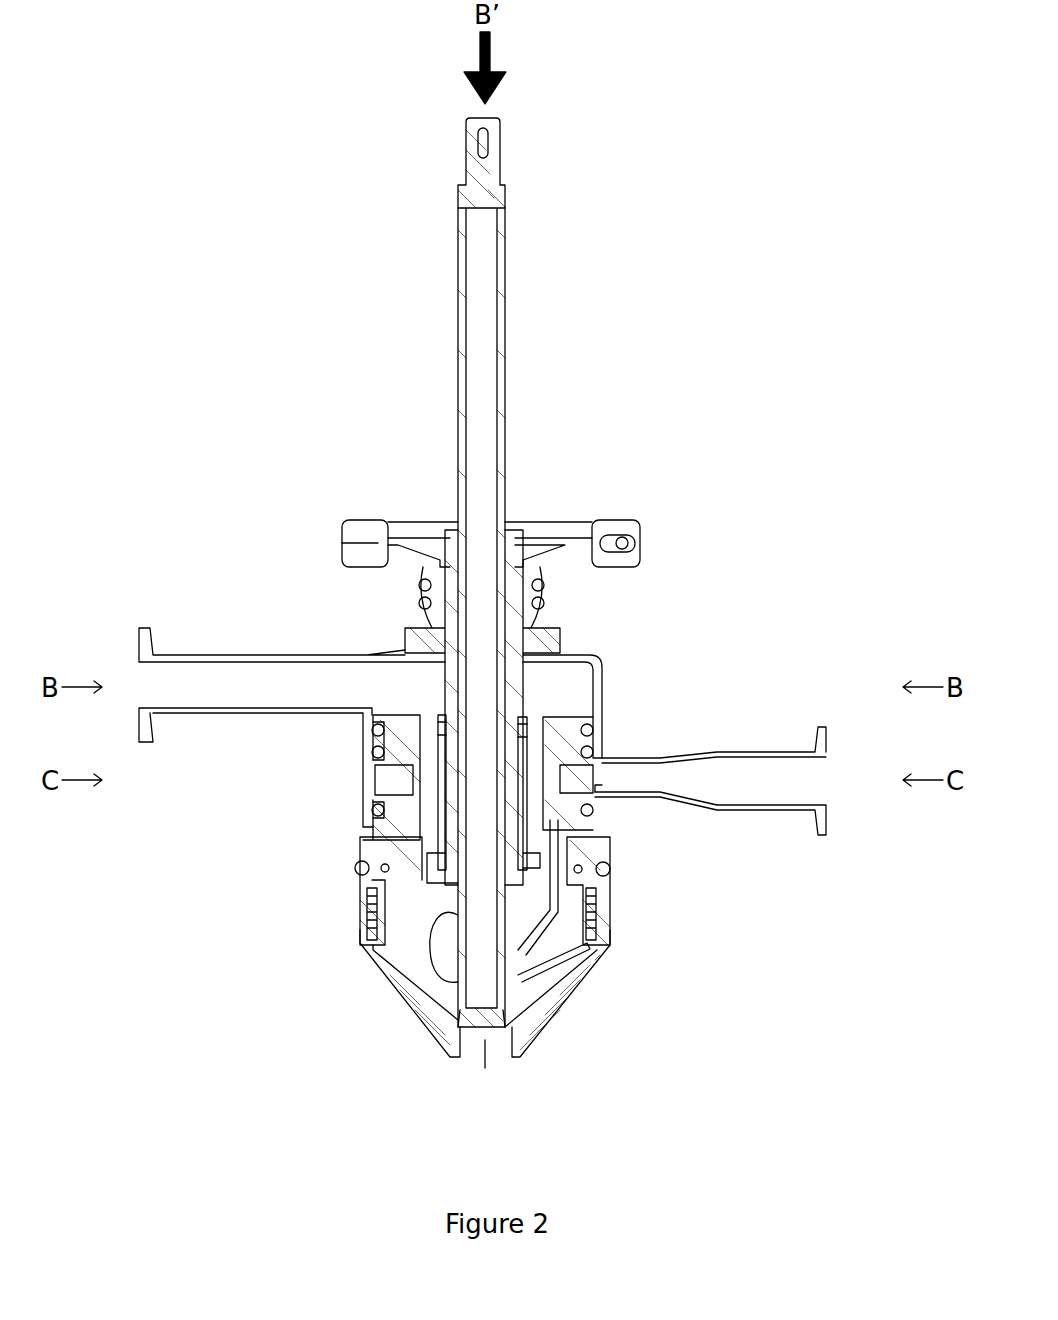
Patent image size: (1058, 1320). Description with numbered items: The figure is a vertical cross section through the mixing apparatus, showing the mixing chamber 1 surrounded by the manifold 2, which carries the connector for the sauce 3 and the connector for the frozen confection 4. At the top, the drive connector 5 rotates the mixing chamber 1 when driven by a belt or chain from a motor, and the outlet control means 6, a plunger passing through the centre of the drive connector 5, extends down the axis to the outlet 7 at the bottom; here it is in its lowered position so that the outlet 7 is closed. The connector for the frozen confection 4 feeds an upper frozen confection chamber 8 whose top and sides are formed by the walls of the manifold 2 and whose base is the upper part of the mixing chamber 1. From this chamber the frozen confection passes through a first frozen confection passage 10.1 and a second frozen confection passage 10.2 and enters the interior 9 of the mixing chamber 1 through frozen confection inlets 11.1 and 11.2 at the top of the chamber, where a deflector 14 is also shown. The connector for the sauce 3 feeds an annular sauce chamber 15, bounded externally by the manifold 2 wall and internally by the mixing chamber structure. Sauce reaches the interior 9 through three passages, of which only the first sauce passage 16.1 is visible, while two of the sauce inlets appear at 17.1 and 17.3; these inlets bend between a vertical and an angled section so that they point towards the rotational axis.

The mixing chamber 1 is at (568, 1005).
The manifold 2 is at (605, 660).
The connector for the sauce 3 is at (712, 775).
The connector for the frozen confection 4 is at (290, 680).
The drive connector 5 is at (525, 550).
The outlet control means 6 is at (510, 428).
The outlet 7 is at (485, 1040).
The upper frozen confection chamber 8 is at (385, 690).
The interior of the mixing chamber 9 is at (405, 912).
The first frozen confection passage 10.1 is at (530, 735).
The second frozen confection passage 10.2 is at (425, 733).
The frozen confection inlet 11.1 is at (530, 825).
The frozen confection inlet 11.2 is at (425, 835).
The deflector 14 is at (425, 868).
The annular sauce chamber 15 is at (390, 785).
The first sauce passage 16.1 is at (555, 893).
The inlet of first sauce passage 17.1 is at (525, 965).
The inlet of third sauce passage 17.3 is at (458, 957).